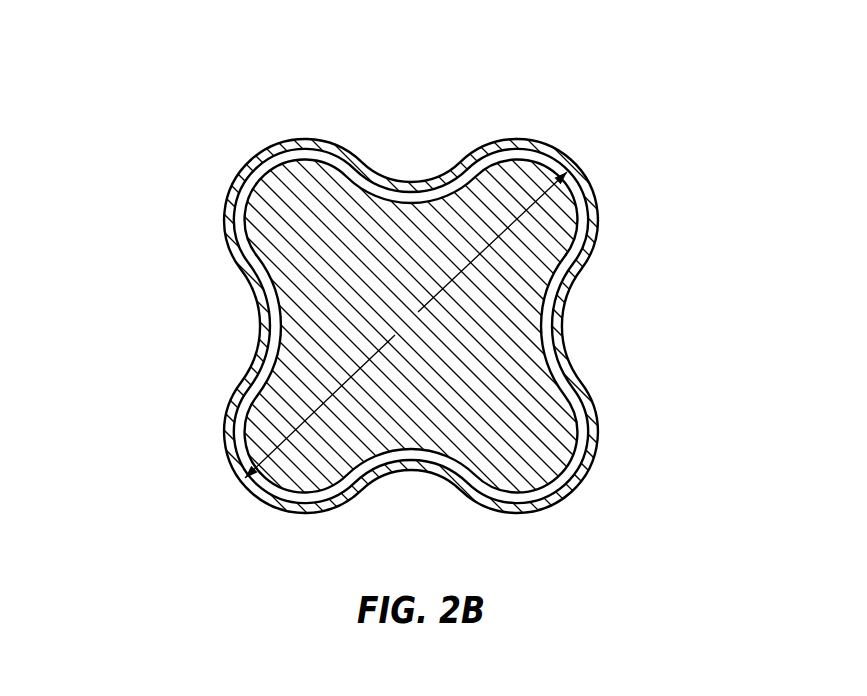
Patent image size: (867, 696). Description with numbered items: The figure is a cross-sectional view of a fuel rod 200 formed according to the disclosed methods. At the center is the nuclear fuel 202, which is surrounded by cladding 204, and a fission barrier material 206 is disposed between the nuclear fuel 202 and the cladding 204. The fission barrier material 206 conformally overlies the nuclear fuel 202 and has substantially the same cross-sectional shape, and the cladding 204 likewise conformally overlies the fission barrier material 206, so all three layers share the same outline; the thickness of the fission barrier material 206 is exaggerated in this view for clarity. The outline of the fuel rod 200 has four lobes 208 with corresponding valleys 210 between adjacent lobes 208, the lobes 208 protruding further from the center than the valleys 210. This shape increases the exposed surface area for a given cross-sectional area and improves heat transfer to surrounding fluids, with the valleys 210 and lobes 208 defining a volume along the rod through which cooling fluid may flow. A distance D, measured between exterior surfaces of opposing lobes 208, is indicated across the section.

The fuel rod 200 is at (433, 284).
The nuclear fuel 202 is at (560, 333).
The cladding 204 is at (592, 212).
The fission barrier material 206 is at (580, 270).
The lobes 208 is at (580, 157).
The valleys 210 is at (416, 154).